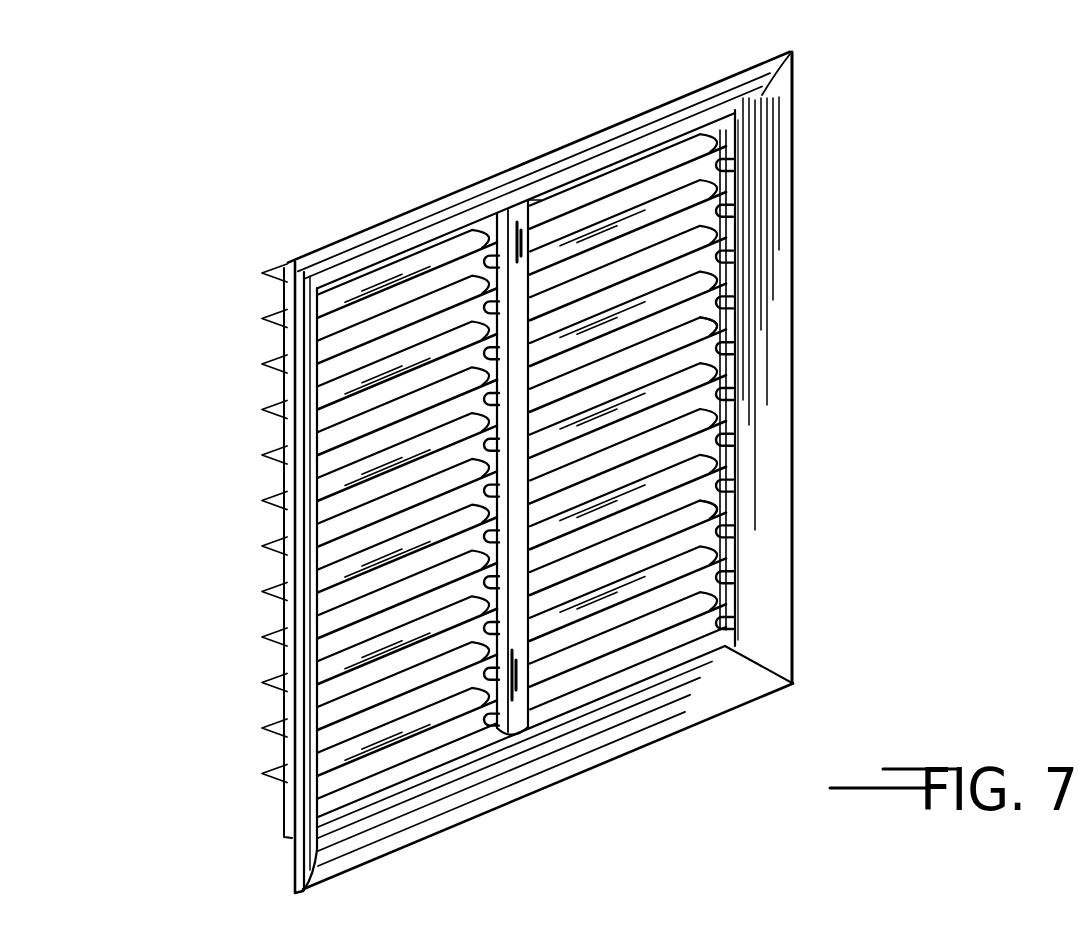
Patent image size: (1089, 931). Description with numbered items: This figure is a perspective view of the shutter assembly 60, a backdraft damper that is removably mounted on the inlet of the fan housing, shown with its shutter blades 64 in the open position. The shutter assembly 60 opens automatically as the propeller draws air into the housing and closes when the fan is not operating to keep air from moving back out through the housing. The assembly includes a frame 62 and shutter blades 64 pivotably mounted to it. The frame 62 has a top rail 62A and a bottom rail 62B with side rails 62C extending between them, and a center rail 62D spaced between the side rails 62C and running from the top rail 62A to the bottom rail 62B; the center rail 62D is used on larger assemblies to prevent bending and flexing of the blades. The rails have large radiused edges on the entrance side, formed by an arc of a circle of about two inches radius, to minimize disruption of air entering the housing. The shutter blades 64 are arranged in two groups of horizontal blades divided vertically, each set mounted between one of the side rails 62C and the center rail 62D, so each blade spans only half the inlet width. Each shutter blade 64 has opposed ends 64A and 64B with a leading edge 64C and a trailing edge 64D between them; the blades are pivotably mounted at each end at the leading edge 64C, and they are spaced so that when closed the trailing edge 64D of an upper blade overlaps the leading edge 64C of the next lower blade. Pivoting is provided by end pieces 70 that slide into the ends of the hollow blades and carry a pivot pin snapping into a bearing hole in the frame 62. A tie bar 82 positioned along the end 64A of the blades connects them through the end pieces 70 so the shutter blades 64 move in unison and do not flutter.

The shutter assembly 60 is at (412, 162).
The frame 62 is at (797, 203).
The top rail 62A is at (567, 143).
The bottom rail 62B is at (527, 780).
The side rails 62C is at (797, 364).
The center rail 62D is at (535, 712).
The shutter blades 64 is at (735, 127).
The first end of shutter blade 64A is at (481, 228).
The second end of shutter blade 64B is at (541, 205).
The leading edge 64C is at (737, 556).
The trailing edge 64D is at (735, 512).
The end piece 70 is at (722, 428).
The tie bar 82 is at (722, 337).